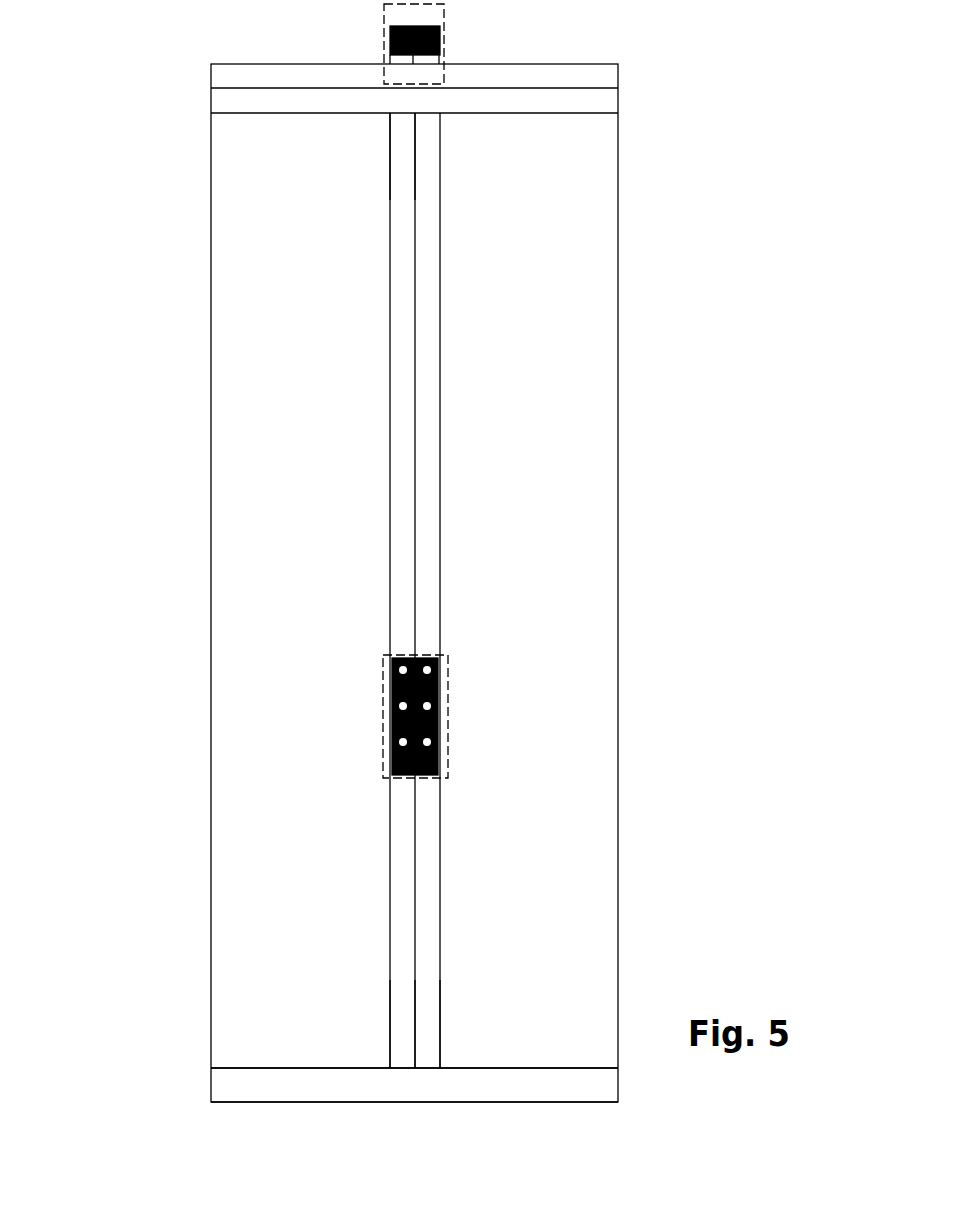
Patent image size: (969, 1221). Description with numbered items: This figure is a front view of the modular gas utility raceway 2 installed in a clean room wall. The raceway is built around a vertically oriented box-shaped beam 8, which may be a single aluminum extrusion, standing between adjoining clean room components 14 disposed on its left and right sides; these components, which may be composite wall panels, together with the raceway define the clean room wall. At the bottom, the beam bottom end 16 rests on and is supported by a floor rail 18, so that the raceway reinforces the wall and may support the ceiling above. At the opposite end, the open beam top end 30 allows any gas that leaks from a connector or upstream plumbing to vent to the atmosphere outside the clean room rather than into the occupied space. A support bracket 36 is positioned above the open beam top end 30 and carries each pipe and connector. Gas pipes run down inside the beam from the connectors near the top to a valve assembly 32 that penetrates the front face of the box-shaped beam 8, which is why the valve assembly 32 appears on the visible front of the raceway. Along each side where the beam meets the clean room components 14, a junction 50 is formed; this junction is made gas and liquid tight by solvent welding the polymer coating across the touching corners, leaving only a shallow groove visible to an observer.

The modular gas utility raceway 2 is at (424, 395).
The box-shaped beam 8 is at (403, 464).
The clean room components 14 is at (245, 765).
The beam bottom end 16 is at (400, 1050).
The floor rail 18 is at (232, 1081).
The beam top end 30 is at (402, 131).
The valve assembly 32 is at (447, 694).
The support bracket 36 is at (440, 30).
The junction 50 is at (388, 322).